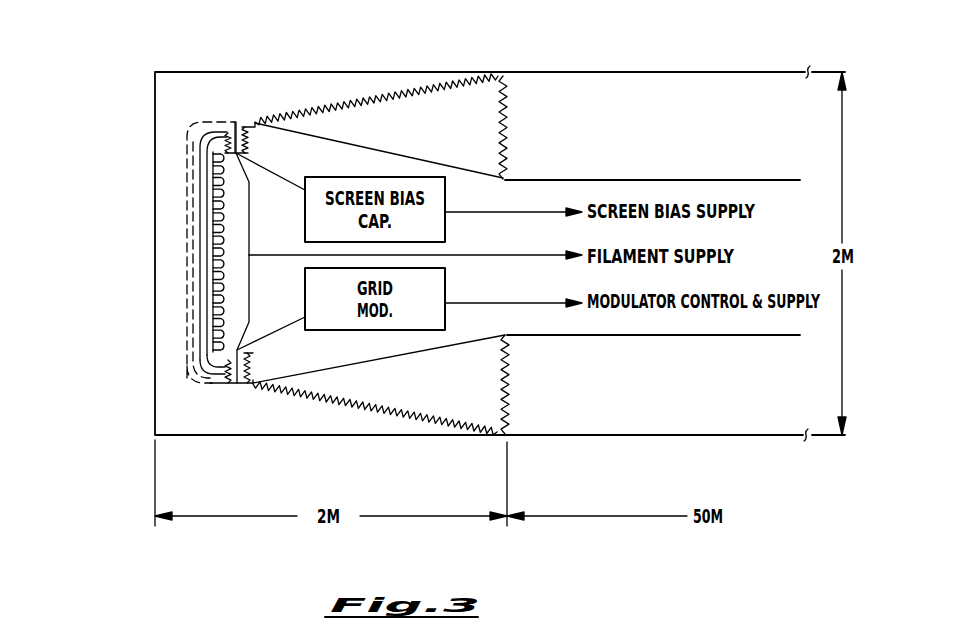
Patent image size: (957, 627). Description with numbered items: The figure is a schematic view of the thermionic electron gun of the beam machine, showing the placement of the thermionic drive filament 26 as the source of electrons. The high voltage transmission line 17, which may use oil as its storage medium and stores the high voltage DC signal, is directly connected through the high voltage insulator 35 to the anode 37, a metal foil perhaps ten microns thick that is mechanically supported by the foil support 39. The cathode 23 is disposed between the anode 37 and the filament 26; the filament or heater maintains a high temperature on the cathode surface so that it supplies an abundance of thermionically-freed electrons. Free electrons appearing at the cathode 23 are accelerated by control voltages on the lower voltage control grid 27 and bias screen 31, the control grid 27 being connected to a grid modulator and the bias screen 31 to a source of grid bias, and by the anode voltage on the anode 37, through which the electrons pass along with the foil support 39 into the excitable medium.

The transmission line 17 is at (640, 103).
The high voltage insulator 35 is at (402, 93).
The control grid 27 is at (135, 243).
The bias screen 31 is at (187, 178).
The cathode 23 is at (197, 247).
The anode 37 is at (141, 270).
The foil support 39 is at (185, 378).
The filament 26 is at (213, 383).